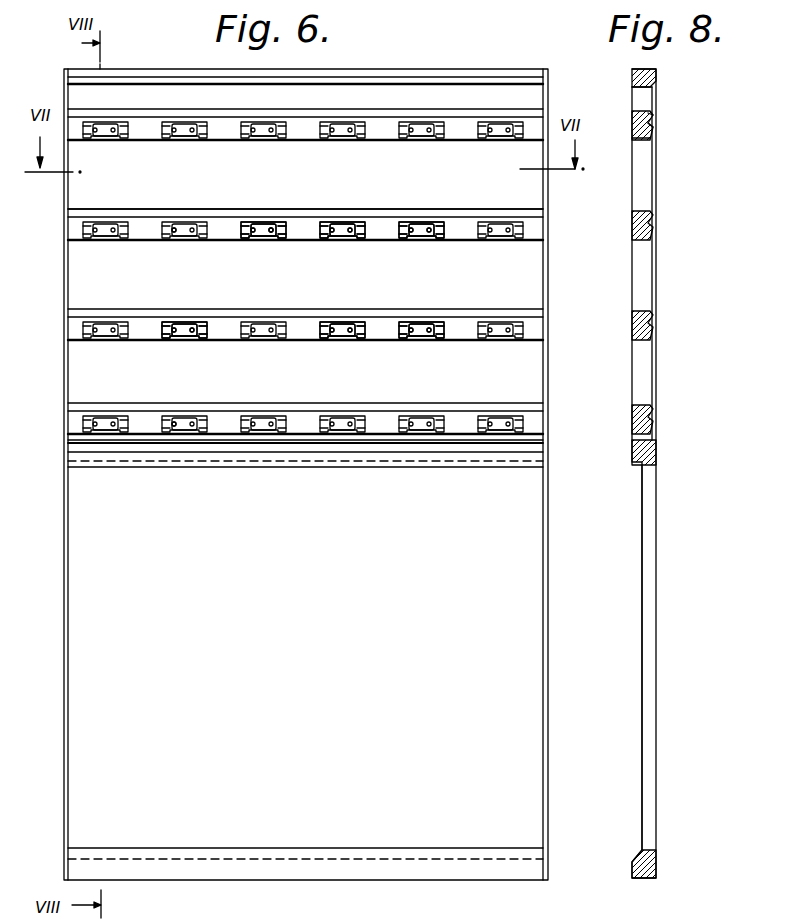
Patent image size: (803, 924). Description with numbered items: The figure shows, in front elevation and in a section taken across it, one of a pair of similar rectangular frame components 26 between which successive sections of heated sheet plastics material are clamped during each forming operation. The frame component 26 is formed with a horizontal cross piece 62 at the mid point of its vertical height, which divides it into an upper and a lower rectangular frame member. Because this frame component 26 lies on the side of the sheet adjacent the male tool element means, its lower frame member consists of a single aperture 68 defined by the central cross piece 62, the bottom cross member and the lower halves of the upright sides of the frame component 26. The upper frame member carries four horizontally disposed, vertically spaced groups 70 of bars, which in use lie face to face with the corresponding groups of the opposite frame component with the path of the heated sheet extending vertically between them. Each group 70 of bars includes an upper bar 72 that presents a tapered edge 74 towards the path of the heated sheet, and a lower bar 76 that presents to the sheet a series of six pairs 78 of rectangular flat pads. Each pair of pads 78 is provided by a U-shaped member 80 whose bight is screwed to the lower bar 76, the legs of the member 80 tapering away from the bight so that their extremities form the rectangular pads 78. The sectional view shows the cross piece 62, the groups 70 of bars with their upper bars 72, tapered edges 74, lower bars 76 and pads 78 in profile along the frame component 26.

In FIG. 6, the frame component 26 is at (68, 568).
In FIG. 8, the frame component 26 is at (642, 522).
In FIG. 6, the horizontal cross piece 62 is at (185, 467).
In FIG. 8, the horizontal cross piece 62 is at (632, 452).
In FIG. 6, the single aperture 68 is at (295, 656).
In FIG. 6, the group of bars 70 is at (134, 209).
In FIG. 8, the group of bars 70 is at (632, 128).
In FIG. 6, the upper bar 72 is at (228, 209).
In FIG. 8, the upper bar 72 is at (643, 103).
In FIG. 6, the tapered edge 74 is at (293, 215).
In FIG. 8, the tapered edge 74 is at (652, 118).
In FIG. 6, the lower bar 76 is at (230, 232).
In FIG. 8, the lower bar 76 is at (645, 128).
In FIG. 6, the pair of rectangular flat pads 78 is at (359, 319).
In FIG. 8, the pair of rectangular flat pads 78 is at (652, 136).
In FIG. 6, the U-shaped member 80 is at (184, 222).